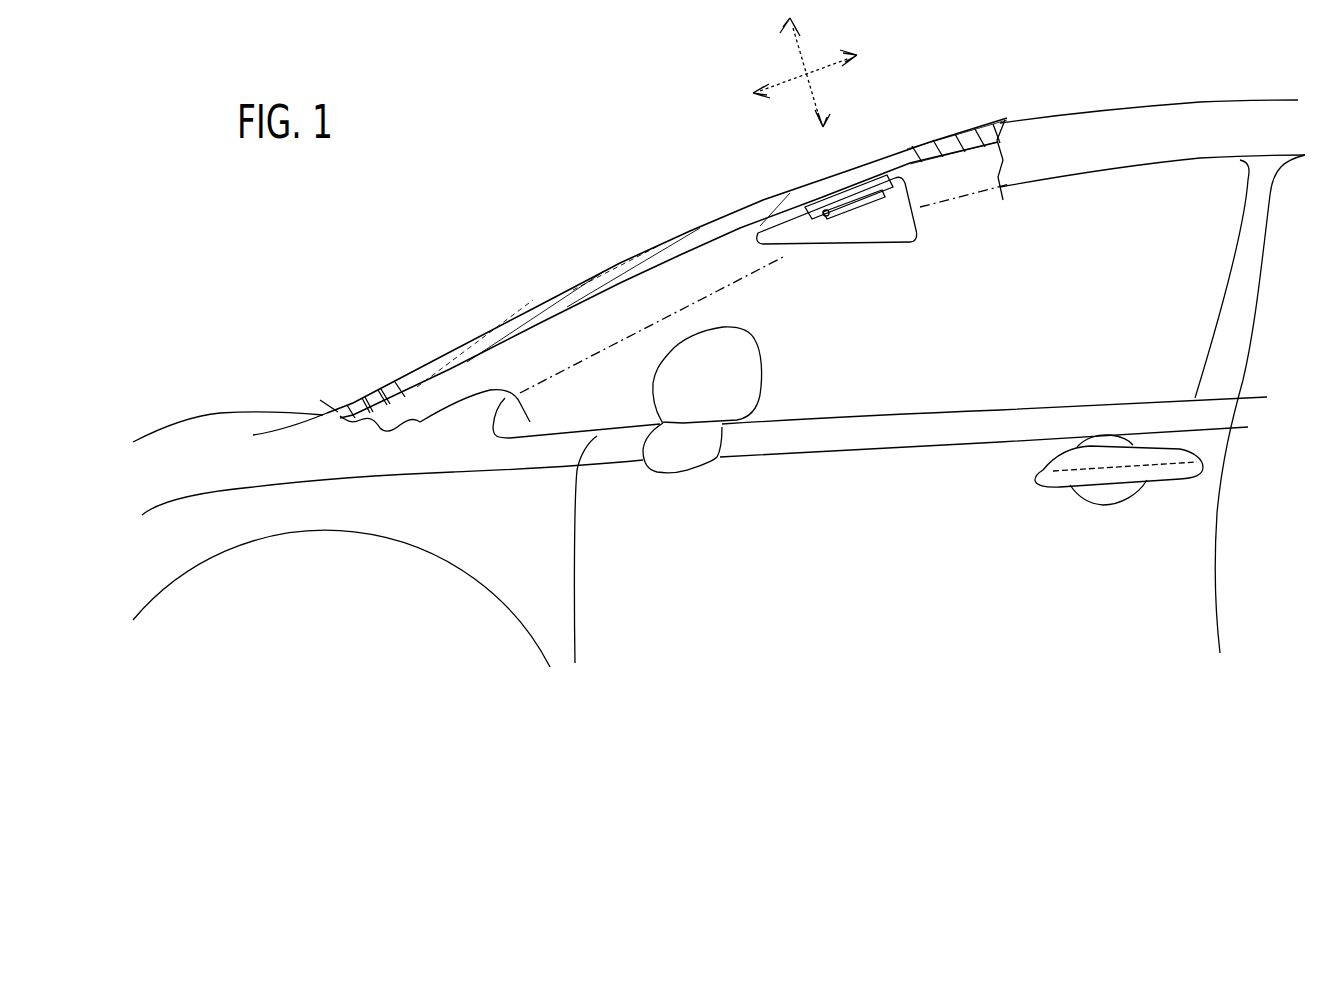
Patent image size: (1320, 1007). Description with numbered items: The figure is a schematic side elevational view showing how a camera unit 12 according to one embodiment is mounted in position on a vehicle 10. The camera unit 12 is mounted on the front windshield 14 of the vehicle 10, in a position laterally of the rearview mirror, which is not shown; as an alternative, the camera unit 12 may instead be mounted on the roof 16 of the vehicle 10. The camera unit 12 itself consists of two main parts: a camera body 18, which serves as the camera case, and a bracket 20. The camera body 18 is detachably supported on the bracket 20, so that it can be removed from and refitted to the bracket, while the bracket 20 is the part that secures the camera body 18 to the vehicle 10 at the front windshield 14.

The vehicle 10 is at (335, 198).
The camera unit 12 is at (906, 302).
The front windshield 14 is at (531, 312).
The roof 16 is at (958, 142).
The camera body 18 is at (880, 233).
The bracket 20 is at (818, 219).